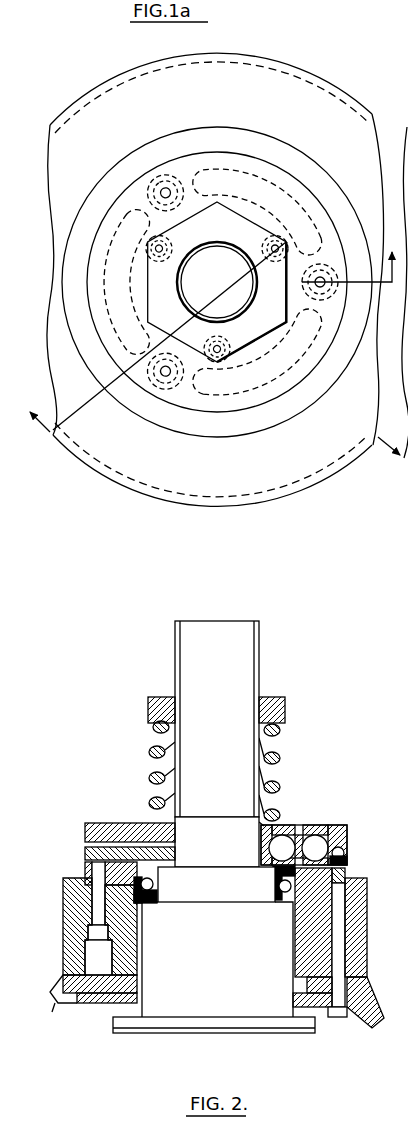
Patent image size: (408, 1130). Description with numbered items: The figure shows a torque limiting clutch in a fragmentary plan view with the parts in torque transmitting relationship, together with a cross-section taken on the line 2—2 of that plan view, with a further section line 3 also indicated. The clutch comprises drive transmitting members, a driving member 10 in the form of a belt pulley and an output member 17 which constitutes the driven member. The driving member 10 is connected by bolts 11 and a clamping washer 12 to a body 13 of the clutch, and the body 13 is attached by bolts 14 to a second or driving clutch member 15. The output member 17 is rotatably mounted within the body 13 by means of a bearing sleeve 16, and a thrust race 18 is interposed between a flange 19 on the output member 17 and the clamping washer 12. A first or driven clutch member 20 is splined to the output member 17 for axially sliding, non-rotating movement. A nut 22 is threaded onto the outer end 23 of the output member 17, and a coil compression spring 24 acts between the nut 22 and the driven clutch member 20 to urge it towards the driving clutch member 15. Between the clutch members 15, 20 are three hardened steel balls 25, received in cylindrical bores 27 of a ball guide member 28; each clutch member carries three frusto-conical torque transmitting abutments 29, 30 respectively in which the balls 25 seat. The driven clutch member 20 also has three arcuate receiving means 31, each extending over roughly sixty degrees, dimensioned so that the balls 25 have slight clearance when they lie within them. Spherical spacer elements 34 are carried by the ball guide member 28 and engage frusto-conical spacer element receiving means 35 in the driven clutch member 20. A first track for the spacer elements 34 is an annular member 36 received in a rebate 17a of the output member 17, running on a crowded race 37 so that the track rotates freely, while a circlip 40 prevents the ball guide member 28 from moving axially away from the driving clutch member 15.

In FIG. 1A, the driving member 10 is at (326, 462).
In FIG. 2, the driving member 10 is at (68, 1005).
In FIG. 2, the bolts 11 is at (345, 1013).
In FIG. 2, the clamping washer 12 is at (321, 1002).
In FIG. 2, the body 13 is at (360, 918).
In FIG. 2, the bolts 14 is at (100, 908).
In FIG. 2, the driving clutch member 15 is at (85, 870).
In FIG. 2, the bearing sleeve 16 is at (138, 941).
In FIG. 2, the output member 17 is at (217, 959).
In FIG. 2, the rebate 17a is at (274, 903).
In FIG. 2, the thrust race 18 is at (115, 1012).
In FIG. 2, the flange 19 is at (304, 1022).
In FIG. 1A, the driven clutch member 20 is at (125, 198).
In FIG. 2, the driven clutch member 20 is at (98, 832).
In FIG. 1A, the nut 22 is at (200, 204).
In FIG. 2, the nut 22 is at (268, 705).
In FIG. 2, the outer end 23 is at (262, 653).
In FIG. 2, the coil compression spring 24 is at (276, 762).
In FIG. 1A, the balls 25 is at (171, 172).
In FIG. 2, the balls 25 is at (340, 830).
In FIG. 2, the cylindrical bores 27 is at (348, 847).
In FIG. 2, the ball guide member 28 is at (350, 860).
In FIG. 1A, the torque transmitting abutments 29 is at (242, 280).
In FIG. 2, the torque transmitting abutments 29 is at (357, 892).
In FIG. 1A, the torque transmitting abutments 30 is at (242, 280).
In FIG. 2, the torque transmitting abutments 30 is at (319, 835).
In FIG. 1A, the torque transmitting element receiving means 31 is at (240, 160).
In FIG. 1A, the spacer elements 34 is at (163, 238).
In FIG. 2, the spacer elements 34 is at (297, 832).
In FIG. 1A, the spacer element receiving means 35 is at (214, 287).
In FIG. 2, the spacer element receiving means 35 is at (284, 835).
In FIG. 2, the annular member 36 is at (273, 876).
In FIG. 2, the crowded race 37 is at (154, 886).
In FIG. 2, the circlip 40 is at (172, 852).
In FIG. 1A, the section line 2- 2 is at (210, 330).
In FIG. 1A, the section line 3 is at (389, 439).